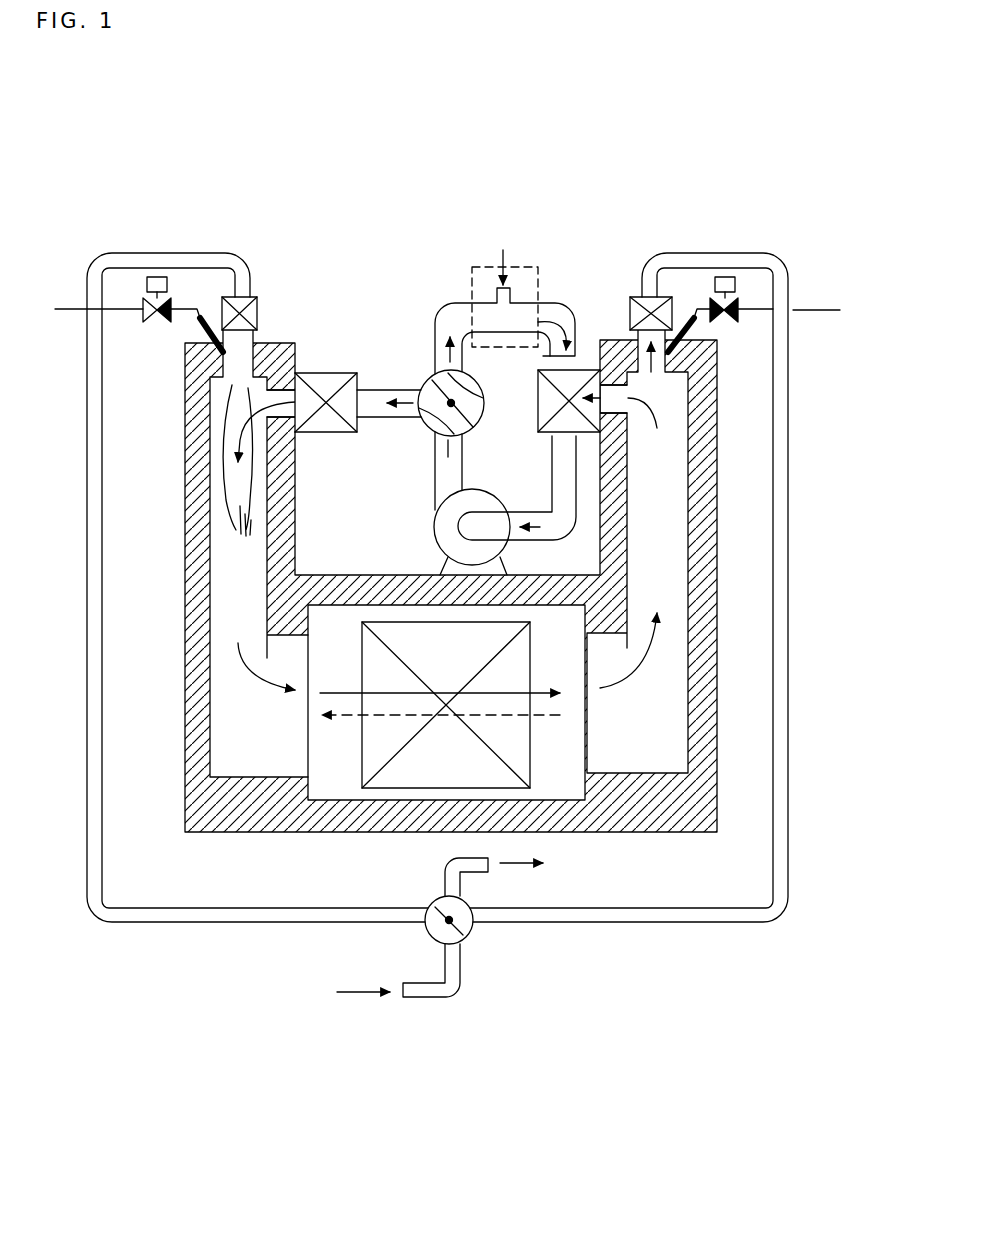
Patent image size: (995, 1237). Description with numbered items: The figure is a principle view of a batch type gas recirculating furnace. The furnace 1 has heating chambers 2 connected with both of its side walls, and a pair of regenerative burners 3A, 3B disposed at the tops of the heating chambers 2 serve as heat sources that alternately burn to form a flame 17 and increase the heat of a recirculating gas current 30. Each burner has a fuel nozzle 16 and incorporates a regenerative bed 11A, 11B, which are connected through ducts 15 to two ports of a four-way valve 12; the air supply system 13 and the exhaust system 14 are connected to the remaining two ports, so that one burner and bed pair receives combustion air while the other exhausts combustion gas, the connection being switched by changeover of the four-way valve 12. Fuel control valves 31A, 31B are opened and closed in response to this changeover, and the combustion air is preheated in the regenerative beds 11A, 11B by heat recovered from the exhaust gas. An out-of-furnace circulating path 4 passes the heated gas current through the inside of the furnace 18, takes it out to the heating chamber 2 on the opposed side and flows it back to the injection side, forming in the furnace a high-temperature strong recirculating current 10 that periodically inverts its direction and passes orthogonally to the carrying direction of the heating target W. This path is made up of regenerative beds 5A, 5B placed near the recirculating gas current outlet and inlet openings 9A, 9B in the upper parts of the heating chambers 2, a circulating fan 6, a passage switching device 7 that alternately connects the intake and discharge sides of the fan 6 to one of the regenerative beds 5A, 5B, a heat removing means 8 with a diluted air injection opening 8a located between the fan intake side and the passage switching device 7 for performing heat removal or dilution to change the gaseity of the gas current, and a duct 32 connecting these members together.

The furnace 1 is at (357, 833).
The heating chambers 2 is at (217, 613).
The burner 3A is at (229, 370).
The burner 3B is at (667, 276).
The out-of-furnace circulating path 4 is at (465, 372).
The regenerative bed 5A is at (340, 373).
The regenerative bed 5B is at (535, 420).
The circulating fan 6 is at (437, 512).
The passage switching device 7 is at (421, 366).
The heat removing means 8 is at (545, 272).
The diluted air injection opening 8a is at (497, 290).
The recirculating gas current outlet and inlet opening 9A is at (278, 388).
The recirculating gas current outlet and inlet opening 9B is at (614, 345).
The high-temperature strong recirculating current 10 is at (415, 703).
The regenerative bed 11A is at (257, 300).
The regenerative bed 11B is at (673, 300).
The four-way valve 12 is at (460, 943).
The air supply system 13 is at (427, 997).
The exhaust system 14 is at (477, 868).
The ducts 15 is at (255, 922).
The fuel nozzle 16 is at (212, 345).
The flame 17 is at (223, 436).
The inside of the furnace 18 is at (347, 782).
The recirculating gas current 30 is at (463, 378).
The fuel control valve 31A is at (157, 277).
The fuel control valve 31B is at (727, 276).
The duct 32 is at (375, 392).
The heating target W is at (417, 770).